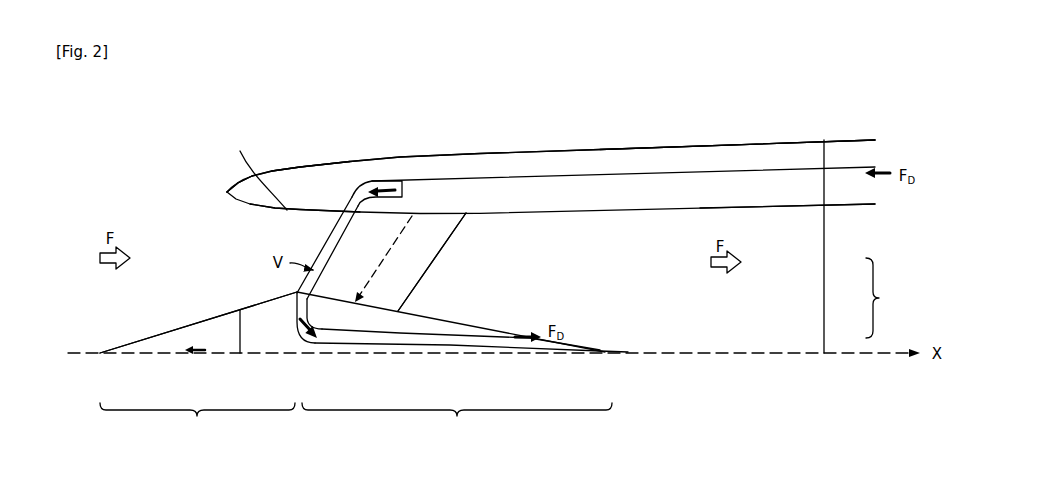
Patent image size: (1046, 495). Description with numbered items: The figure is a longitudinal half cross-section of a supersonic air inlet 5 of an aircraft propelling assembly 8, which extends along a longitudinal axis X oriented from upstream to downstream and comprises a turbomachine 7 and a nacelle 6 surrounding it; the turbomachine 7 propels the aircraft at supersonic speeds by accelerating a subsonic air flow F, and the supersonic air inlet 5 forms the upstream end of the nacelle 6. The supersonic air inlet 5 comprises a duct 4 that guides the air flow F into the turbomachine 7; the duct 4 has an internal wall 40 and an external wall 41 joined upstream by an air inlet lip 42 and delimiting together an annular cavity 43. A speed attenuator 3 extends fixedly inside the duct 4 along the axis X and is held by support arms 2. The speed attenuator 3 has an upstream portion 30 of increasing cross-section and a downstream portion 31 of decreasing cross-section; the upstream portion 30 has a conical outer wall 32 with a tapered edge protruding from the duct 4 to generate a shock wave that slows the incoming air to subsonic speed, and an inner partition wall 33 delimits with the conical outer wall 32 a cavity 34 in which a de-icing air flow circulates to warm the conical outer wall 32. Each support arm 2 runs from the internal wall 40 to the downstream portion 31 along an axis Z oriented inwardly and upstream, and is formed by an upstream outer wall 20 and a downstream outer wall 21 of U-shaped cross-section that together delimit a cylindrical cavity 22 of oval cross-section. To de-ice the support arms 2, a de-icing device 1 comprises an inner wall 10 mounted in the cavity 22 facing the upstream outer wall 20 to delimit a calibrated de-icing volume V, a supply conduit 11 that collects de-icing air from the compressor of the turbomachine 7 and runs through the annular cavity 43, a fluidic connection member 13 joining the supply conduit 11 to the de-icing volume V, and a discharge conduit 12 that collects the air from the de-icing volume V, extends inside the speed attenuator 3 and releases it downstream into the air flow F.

The de-icing device 1 is at (393, 141).
The support arm 2 is at (420, 288).
The speed attenuator 3 is at (112, 365).
The duct 4 is at (574, 147).
The supersonic air inlet 5 is at (751, 139).
The nacelle 6 is at (845, 209).
The turbomachine 7 is at (849, 340).
The aircraft propelling assembly 8 is at (881, 298).
The inner wall 10 is at (303, 291).
The supply conduit 11 is at (453, 180).
The discharge conduit 12 is at (450, 352).
The fluidic connection member 13 is at (367, 196).
The upstream outer wall 20 is at (319, 255).
The downstream outer wall 21 is at (430, 264).
The cavity 22 is at (373, 259).
The upstream portion 30 is at (197, 424).
The downstream portion 31 is at (457, 422).
The conical outer wall 32 is at (137, 340).
The inner partition wall 33 is at (240, 353).
The cavity 34 is at (184, 359).
The internal wall 40 is at (258, 172).
The external wall 41 is at (300, 166).
The air inlet lip 42 is at (227, 191).
The annular cavity 43 is at (326, 199).